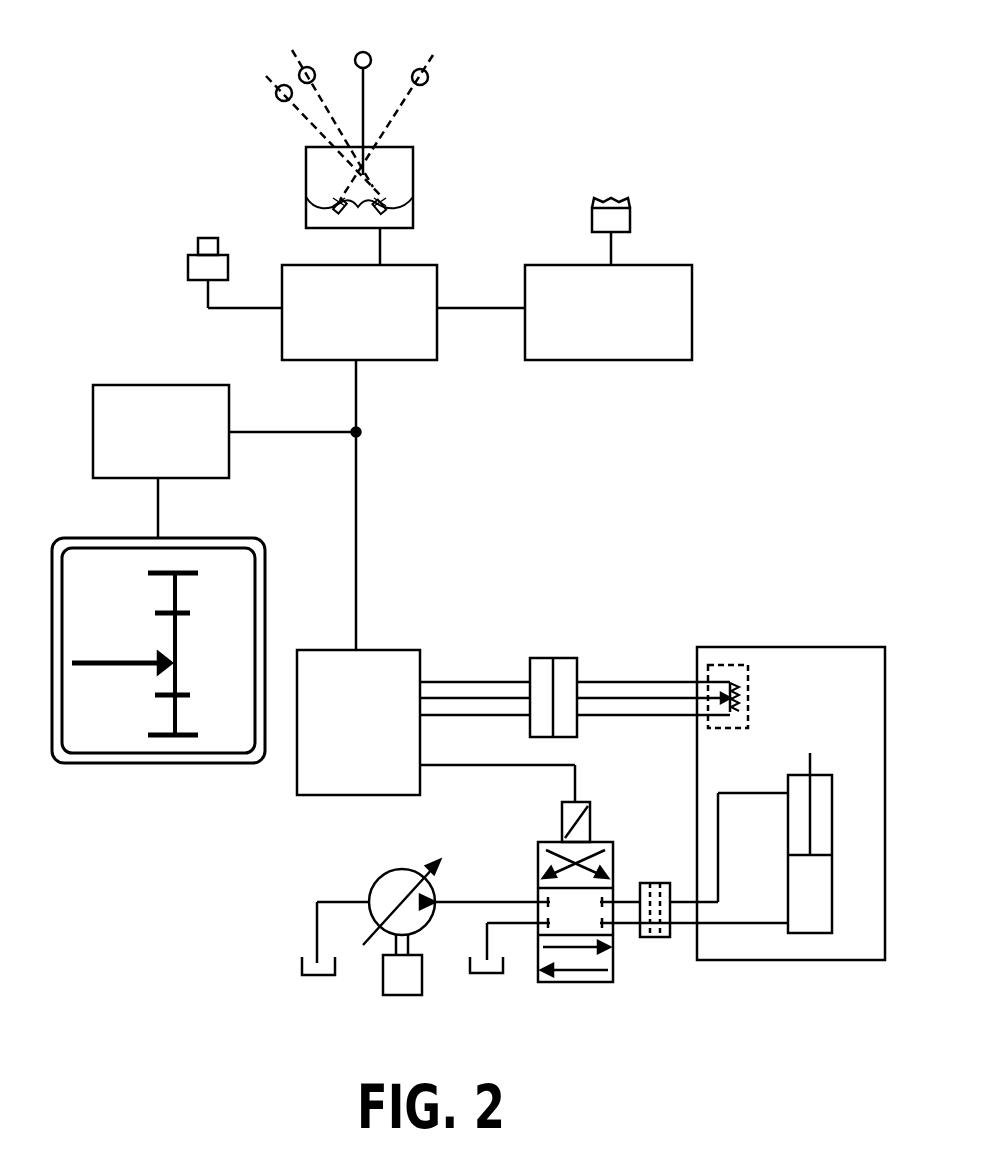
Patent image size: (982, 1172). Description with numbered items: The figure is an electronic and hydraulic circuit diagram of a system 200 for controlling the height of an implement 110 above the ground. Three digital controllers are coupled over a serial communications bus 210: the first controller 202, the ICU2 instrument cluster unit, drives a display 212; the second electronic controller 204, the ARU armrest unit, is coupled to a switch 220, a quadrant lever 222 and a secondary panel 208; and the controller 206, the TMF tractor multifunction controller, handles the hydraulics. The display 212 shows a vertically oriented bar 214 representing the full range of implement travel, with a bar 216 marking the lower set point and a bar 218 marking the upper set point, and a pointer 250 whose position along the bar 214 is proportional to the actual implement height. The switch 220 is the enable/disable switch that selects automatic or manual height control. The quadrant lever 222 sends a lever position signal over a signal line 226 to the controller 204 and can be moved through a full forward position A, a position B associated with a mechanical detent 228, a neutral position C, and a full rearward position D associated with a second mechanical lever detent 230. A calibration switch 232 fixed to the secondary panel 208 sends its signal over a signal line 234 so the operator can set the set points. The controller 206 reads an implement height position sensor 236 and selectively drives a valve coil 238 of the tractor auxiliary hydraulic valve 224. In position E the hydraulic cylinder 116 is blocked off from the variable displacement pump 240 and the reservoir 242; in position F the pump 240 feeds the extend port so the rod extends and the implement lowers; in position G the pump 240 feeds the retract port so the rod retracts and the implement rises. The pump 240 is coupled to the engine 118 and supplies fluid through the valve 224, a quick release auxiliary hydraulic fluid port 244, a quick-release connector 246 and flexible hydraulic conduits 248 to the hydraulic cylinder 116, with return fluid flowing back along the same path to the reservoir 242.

The system 200 is at (144, 216).
The first controller 202 is at (130, 385).
The second electronic controller 204 is at (385, 360).
The controller 206 is at (380, 650).
The secondary panel 208 is at (692, 325).
The serial communications bus 210 is at (356, 508).
The display 212 is at (262, 553).
The bar 214 is at (175, 593).
The bar 216 is at (165, 696).
The bar 218 is at (175, 613).
The switch 220 is at (228, 254).
The quadrant lever 222 is at (413, 175).
The tractor auxiliary hydraulic valve 224 is at (538, 960).
The signal line 226 is at (380, 246).
The mechanical detent 228 is at (413, 197).
The second mechanical lever detent 230 is at (306, 197).
The calibration switch 232 is at (630, 225).
The signal line 234 is at (481, 308).
The implement height position sensor 236 is at (729, 665).
The valve coil 238 is at (562, 820).
The variable displacement pump 240 is at (385, 872).
The reservoir 242 is at (310, 975).
The quick release auxiliary hydraulic fluid port 244 is at (636, 932).
The quick-release connector 246 is at (650, 883).
The flexible hydraulic conduits 248 is at (685, 945).
The pointer 250 is at (118, 662).
The implement 110 is at (815, 647).
The hydraulic cylinder 116 is at (822, 775).
The engine 118 is at (422, 975).
The position A is at (284, 85).
The position B is at (307, 67).
The position C is at (363, 52).
The position D is at (420, 69).
The position E is at (538, 893).
The position F is at (538, 870).
The position G is at (576, 982).